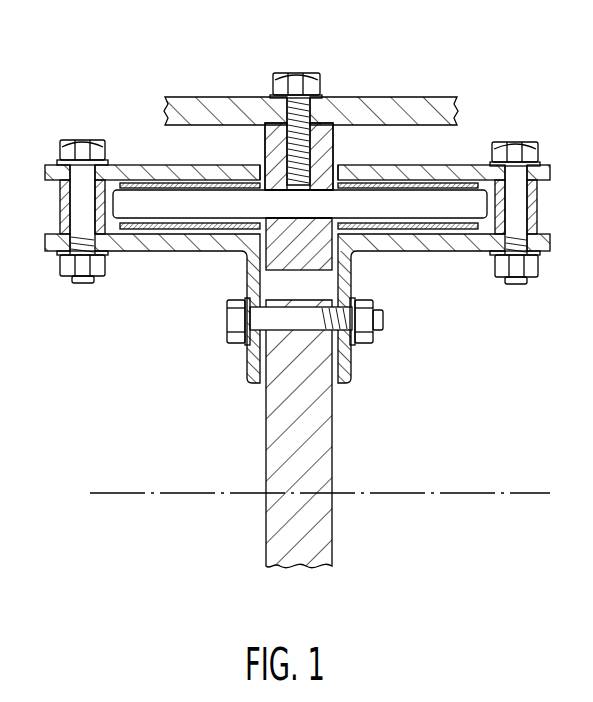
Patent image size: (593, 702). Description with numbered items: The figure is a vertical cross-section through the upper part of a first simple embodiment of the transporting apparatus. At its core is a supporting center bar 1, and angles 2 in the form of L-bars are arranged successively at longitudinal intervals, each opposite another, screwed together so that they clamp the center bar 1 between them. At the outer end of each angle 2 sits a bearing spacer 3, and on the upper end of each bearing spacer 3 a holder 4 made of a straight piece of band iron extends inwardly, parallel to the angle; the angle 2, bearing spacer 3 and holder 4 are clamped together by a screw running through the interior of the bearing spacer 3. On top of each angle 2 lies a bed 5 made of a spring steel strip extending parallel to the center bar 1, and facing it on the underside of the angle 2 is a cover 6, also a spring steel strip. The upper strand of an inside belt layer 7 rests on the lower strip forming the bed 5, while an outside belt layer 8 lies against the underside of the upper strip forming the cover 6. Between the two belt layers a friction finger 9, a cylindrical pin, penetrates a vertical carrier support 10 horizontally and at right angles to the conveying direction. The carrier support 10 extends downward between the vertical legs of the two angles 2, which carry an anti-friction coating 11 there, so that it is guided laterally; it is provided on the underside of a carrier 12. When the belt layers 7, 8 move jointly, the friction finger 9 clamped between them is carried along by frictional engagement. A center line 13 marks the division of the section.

The supporting center bar 1 is at (308, 462).
The angle 2 is at (253, 267).
The bearing spacer 3 is at (60, 217).
The holder 4 is at (133, 170).
The bed 5 is at (147, 236).
The cover 6 is at (182, 184).
The inside belt layer 7 is at (192, 233).
The outside belt layer 8 is at (218, 176).
The friction finger 9 is at (392, 200).
The carrier support 10 is at (320, 137).
The anti-friction coating 11 is at (262, 385).
The carrier 12 is at (245, 76).
The center line 13 is at (442, 494).